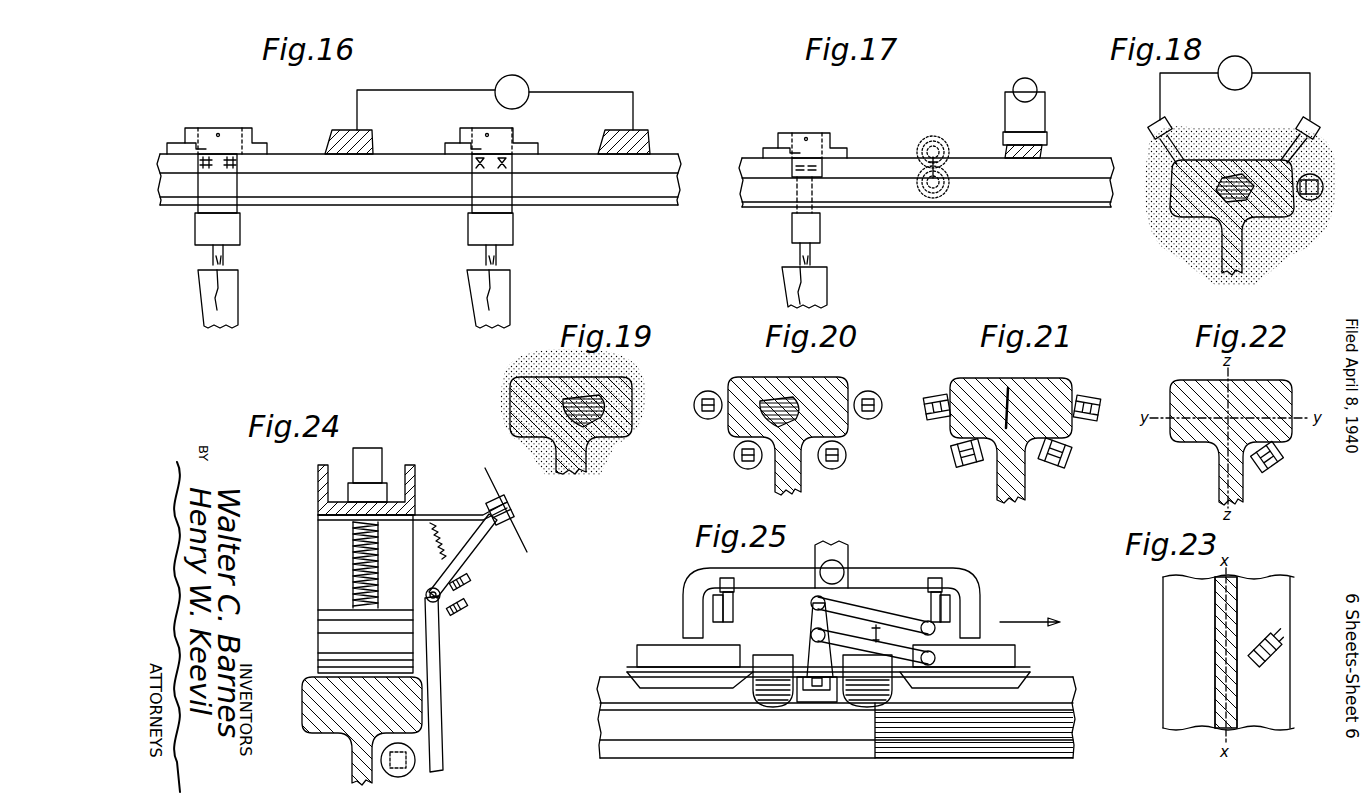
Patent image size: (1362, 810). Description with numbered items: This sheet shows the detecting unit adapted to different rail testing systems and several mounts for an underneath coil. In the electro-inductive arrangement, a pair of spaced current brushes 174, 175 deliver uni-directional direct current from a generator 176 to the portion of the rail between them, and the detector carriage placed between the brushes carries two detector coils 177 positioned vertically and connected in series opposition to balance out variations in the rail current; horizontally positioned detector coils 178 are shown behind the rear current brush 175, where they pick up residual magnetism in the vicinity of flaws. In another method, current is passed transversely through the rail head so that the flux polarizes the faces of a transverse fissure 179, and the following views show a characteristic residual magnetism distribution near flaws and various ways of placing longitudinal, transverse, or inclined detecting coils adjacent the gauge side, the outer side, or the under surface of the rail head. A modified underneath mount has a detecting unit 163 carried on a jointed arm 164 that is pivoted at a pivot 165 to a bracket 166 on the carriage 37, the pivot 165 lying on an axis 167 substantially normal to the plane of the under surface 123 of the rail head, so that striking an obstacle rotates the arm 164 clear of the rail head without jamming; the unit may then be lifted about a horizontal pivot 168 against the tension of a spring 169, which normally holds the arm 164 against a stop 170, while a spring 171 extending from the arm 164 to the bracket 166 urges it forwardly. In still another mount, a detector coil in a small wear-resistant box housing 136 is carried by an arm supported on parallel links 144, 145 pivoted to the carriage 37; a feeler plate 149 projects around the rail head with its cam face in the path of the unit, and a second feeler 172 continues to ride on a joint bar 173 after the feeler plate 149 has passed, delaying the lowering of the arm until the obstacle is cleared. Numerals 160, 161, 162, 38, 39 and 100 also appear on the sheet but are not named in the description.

In FIG. 16, the current brush 174 is at (646, 136).
In FIG. 16, the current brush 175 is at (377, 142).
In FIG. 16, the generator 176 is at (525, 82).
In FIG. 16, the detector coils 177 is at (490, 241).
In FIG. 16, the detector coils 178 is at (217, 241).
In FIG. 17, the clamp 160 is at (823, 158).
In FIG. 17, the transverse fissure 179 is at (927, 150).
In FIG. 20, the search coils 161 is at (878, 385).
In FIG. 21, the search coils 162 is at (1089, 395).
In FIG. 24, the carriage 37 is at (318, 487).
In FIG. 25, the carriage 37 is at (660, 645).
In FIG. 25, the brush shoe 38 is at (625, 668).
In FIG. 25, the frame 39 is at (937, 568).
In FIG. 25, the lever 100 is at (812, 630).
In FIG. 24, the under surface of the rail head 123 is at (362, 731).
In FIG. 25, the box housing 136 is at (812, 704).
In FIG. 25, the parallel link 144 is at (853, 610).
In FIG. 25, the parallel link 145 is at (856, 641).
In FIG. 25, the feeler plate 149 is at (924, 715).
In FIG. 24, the detecting unit 163 is at (415, 772).
In FIG. 24, the arm 164 is at (446, 670).
In FIG. 24, the pivot 165 is at (510, 528).
In FIG. 24, the bracket 166 is at (455, 517).
In FIG. 24, the axis 167 is at (487, 478).
In FIG. 24, the horizontal pivot 168 is at (428, 590).
In FIG. 24, the spring 169 is at (470, 607).
In FIG. 24, the stop 170 is at (470, 582).
In FIG. 24, the spring 171 is at (452, 556).
In FIG. 25, the second feeler 172 is at (770, 703).
In FIG. 25, the joint bar 173 is at (862, 732).